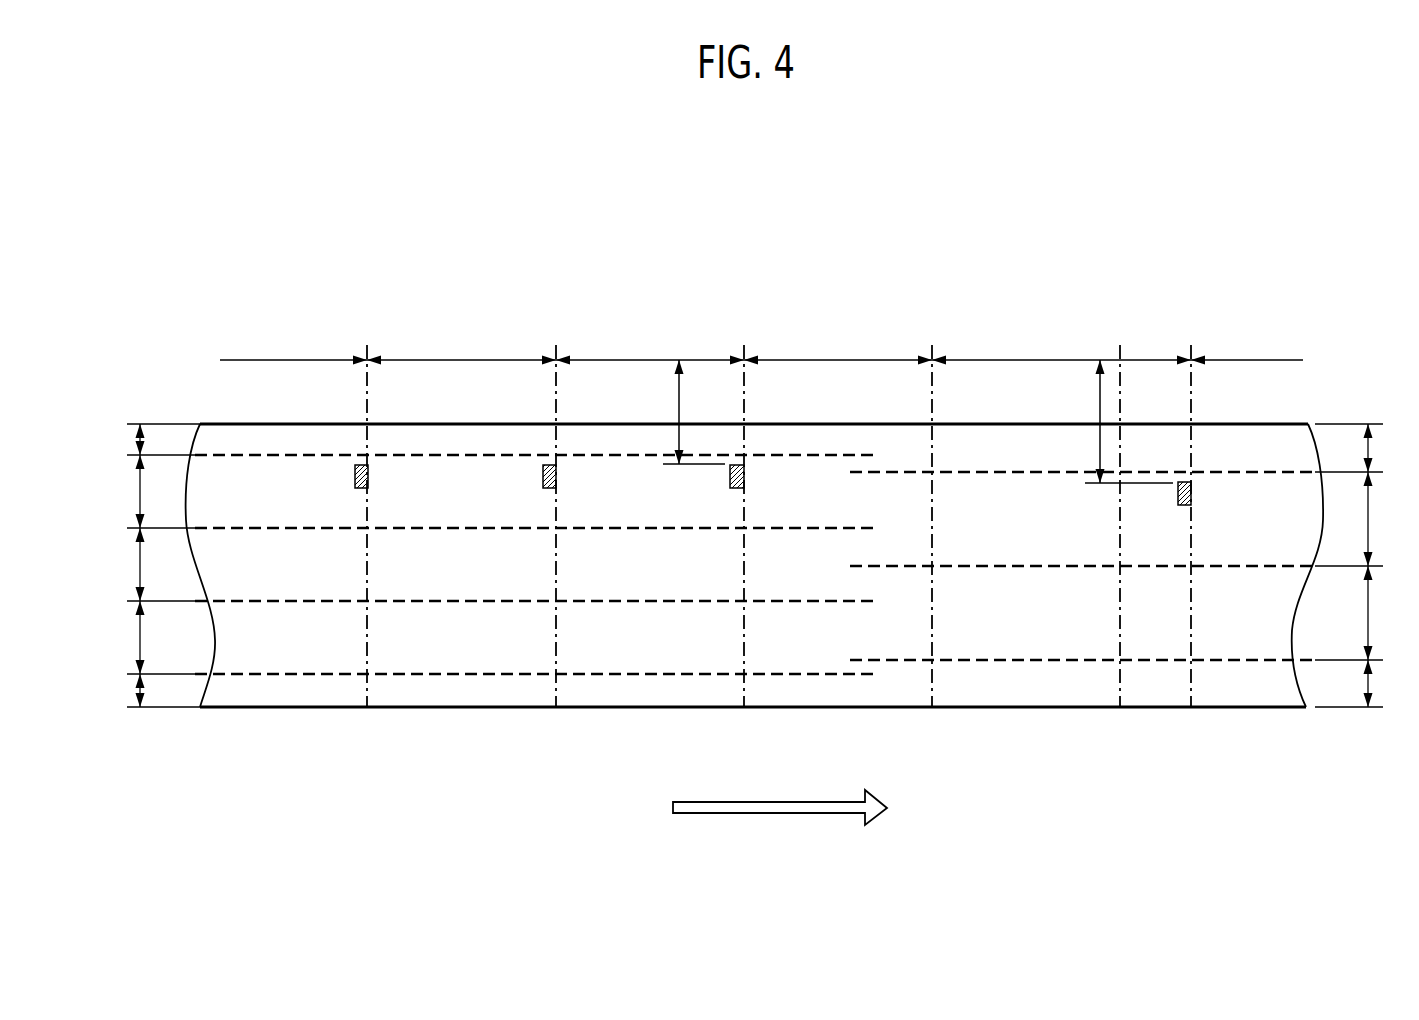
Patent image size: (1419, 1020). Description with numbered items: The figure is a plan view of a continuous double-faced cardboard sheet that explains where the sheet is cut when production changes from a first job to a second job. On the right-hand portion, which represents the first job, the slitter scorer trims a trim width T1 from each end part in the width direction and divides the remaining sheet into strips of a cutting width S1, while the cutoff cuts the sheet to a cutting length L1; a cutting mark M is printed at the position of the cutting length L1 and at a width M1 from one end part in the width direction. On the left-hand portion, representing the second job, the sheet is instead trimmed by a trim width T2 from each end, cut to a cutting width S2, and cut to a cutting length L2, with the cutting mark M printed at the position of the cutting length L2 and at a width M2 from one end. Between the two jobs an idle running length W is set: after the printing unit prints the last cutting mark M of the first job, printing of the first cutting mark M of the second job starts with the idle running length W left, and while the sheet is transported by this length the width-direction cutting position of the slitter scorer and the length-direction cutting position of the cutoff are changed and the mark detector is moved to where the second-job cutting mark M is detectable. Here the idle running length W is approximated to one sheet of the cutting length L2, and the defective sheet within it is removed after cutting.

The cutting mark M is at (366, 470).
The cutting length L1 is at (1152, 339).
The cutting length L2 is at (761, 343).
The idle running length W is at (837, 339).
The width M1 is at (1113, 421).
The width M2 is at (679, 412).
The trim width T1 is at (1365, 565).
The trim width T2 is at (144, 565).
The cutting width S1 is at (1366, 566).
The cutting width S2 is at (142, 564).